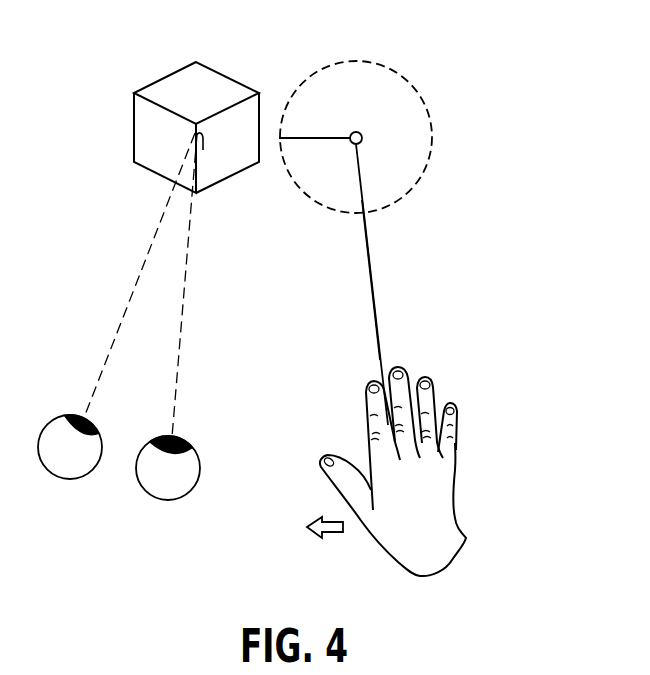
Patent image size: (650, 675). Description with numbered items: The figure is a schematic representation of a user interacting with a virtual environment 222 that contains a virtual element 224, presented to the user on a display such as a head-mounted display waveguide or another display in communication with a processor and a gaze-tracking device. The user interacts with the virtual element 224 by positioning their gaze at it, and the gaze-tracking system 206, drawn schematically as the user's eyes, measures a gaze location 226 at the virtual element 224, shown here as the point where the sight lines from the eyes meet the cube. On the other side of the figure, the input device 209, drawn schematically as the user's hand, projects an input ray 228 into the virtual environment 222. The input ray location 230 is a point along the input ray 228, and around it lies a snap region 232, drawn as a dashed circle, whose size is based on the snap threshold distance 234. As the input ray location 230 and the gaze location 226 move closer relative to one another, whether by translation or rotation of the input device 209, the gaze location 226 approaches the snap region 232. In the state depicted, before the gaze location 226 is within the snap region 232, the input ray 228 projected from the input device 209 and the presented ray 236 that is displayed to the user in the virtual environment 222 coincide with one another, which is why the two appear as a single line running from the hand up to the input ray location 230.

The virtual environment 222 is at (212, 32).
The virtual element 224 is at (134, 125).
The gaze location 226 is at (197, 135).
The gaze-tracking system 206 is at (205, 426).
The snap region 232 is at (387, 68).
The input ray location 230 is at (362, 141).
The snap threshold distance 234 is at (318, 140).
The input ray 228 is at (372, 263).
The presented ray 236 is at (375, 310).
The input device 209 is at (455, 450).